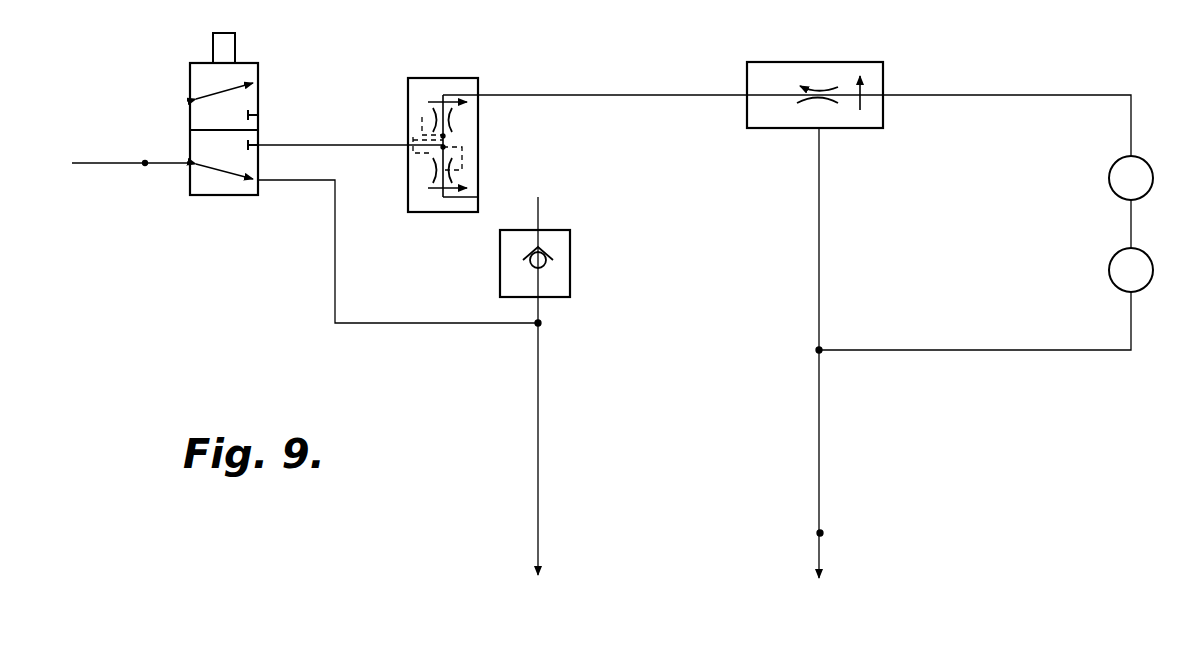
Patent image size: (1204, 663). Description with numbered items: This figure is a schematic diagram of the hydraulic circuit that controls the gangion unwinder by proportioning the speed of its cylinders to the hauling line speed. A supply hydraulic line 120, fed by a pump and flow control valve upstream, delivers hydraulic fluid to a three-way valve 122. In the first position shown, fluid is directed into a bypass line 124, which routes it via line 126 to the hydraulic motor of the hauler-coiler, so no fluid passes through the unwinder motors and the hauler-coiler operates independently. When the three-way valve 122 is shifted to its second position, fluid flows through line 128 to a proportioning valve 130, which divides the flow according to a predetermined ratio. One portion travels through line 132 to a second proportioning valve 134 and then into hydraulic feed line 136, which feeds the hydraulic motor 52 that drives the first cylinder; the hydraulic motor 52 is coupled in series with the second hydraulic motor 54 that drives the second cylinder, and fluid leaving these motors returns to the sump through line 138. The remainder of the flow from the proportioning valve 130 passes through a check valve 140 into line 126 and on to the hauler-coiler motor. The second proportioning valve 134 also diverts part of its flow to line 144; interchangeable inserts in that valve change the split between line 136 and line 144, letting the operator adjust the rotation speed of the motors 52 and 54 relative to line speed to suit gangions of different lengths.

The supply hydraulic line 120 is at (105, 163).
The three-way valve 122 is at (258, 63).
The bypass line 124 is at (335, 285).
The line 126 is at (540, 532).
The line 128 is at (303, 145).
The proportioning valve 130 is at (453, 78).
The line 132 is at (610, 95).
The second proportioning valve 134 is at (822, 62).
The hydraulic feed line 136 is at (975, 95).
The line 138 is at (925, 350).
The check valve 140 is at (570, 262).
The line 144 is at (817, 252).
The hydraulic motor 52 is at (1152, 160).
The second hydraulic motor 54 is at (1108, 262).